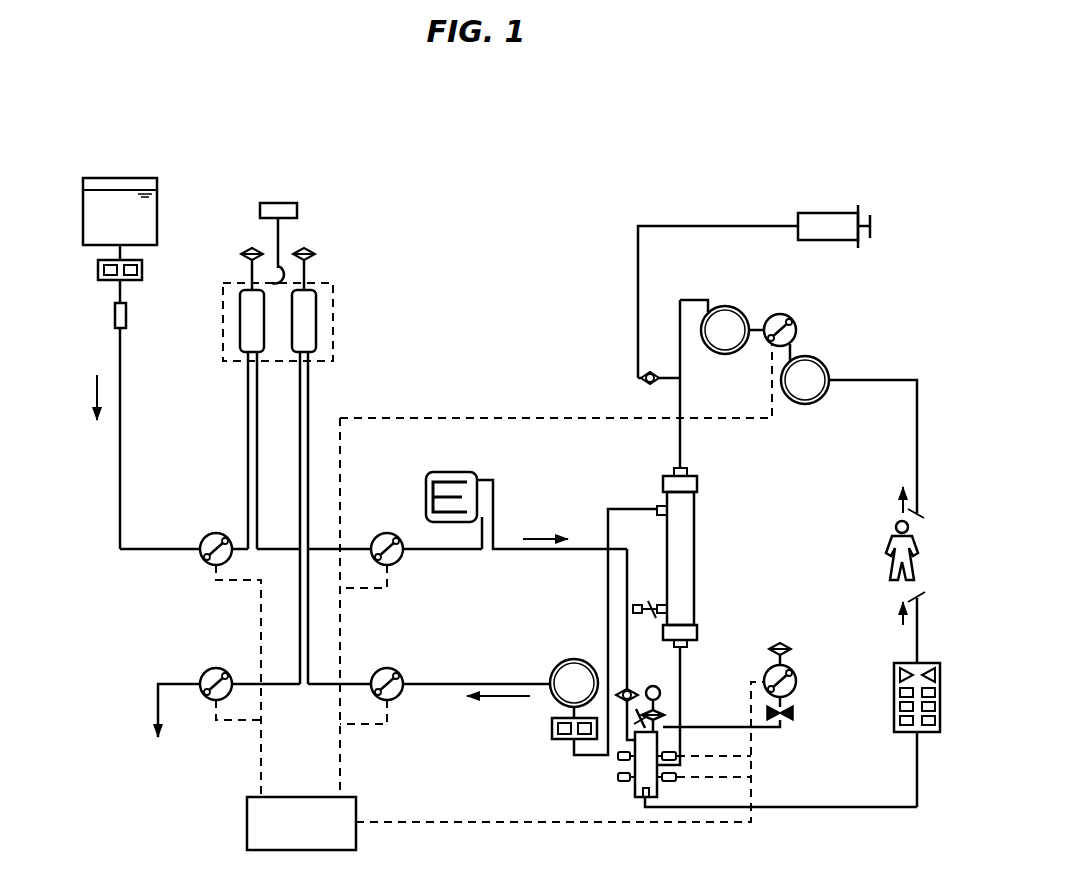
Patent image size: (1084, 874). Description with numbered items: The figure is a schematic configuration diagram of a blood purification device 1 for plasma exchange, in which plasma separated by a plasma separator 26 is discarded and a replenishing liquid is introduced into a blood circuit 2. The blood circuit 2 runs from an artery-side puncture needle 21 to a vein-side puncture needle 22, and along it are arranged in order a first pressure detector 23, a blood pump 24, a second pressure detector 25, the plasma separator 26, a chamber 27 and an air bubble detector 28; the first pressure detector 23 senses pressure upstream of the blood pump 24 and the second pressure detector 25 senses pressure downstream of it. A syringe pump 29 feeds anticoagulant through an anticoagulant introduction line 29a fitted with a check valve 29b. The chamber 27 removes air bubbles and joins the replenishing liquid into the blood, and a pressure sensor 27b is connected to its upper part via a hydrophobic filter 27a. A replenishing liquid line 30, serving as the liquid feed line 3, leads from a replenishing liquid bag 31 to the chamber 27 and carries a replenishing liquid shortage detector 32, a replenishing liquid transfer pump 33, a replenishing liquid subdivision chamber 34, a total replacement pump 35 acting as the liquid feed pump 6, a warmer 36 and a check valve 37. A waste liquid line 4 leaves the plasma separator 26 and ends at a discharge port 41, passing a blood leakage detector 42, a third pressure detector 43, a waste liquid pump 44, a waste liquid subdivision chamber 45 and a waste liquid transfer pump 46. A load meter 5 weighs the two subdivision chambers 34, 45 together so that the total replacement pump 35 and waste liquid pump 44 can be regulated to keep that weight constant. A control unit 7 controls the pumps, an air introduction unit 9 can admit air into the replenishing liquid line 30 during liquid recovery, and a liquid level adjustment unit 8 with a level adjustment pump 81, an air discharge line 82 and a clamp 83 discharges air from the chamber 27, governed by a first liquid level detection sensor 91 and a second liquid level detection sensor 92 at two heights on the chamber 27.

The blood purification device 1 is at (215, 130).
The blood circuit 2 is at (888, 368).
The liquid feed line 3 is at (105, 523).
The waste liquid line 4 is at (145, 675).
The load meter 5 is at (297, 208).
The liquid feed pump 6 is at (405, 566).
The control unit 7 is at (357, 798).
The liquid level adjustment unit 8 is at (798, 664).
The air introduction unit 9 is at (118, 248).
The artery-side puncture needle 21 is at (917, 517).
The vein-side puncture needle 22 is at (920, 597).
The first pressure detector 23 is at (824, 368).
The blood pump 24 is at (790, 320).
The second pressure detector 25 is at (733, 310).
The plasma separator 26 is at (697, 476).
The chamber 27 is at (641, 798).
The hydrophobic filter 27a is at (664, 715).
The pressure sensor 27b is at (661, 691).
The air bubble detector 28 is at (897, 733).
The syringe pump 29 is at (822, 212).
The anticoagulant introduction line 29a is at (638, 272).
The check valve 29b is at (645, 383).
The replenishing liquid line 30 is at (130, 553).
The replenishing liquid bag 31 is at (120, 178).
The replenishing liquid shortage detector 32 is at (105, 295).
The replenishing liquid transfer pump 33 is at (213, 534).
The replenishing liquid subdivision chamber 34 is at (240, 322).
The total replacement pump 35 is at (385, 534).
The warmer 36 is at (447, 472).
The check valve 37 is at (620, 688).
The discharge port 41 is at (163, 731).
The blood leakage detector 42 is at (552, 728).
The third pressure detector 43 is at (554, 665).
The waste liquid pump 44 is at (385, 668).
The waste liquid subdivision chamber 45 is at (316, 322).
The waste liquid transfer pump 46 is at (213, 668).
The level adjustment pump 81 is at (797, 682).
The air discharge line 82 is at (768, 730).
The clamp 83 is at (797, 713).
The first liquid level detection sensor 91 is at (617, 780).
The second liquid level detection sensor 92 is at (617, 758).